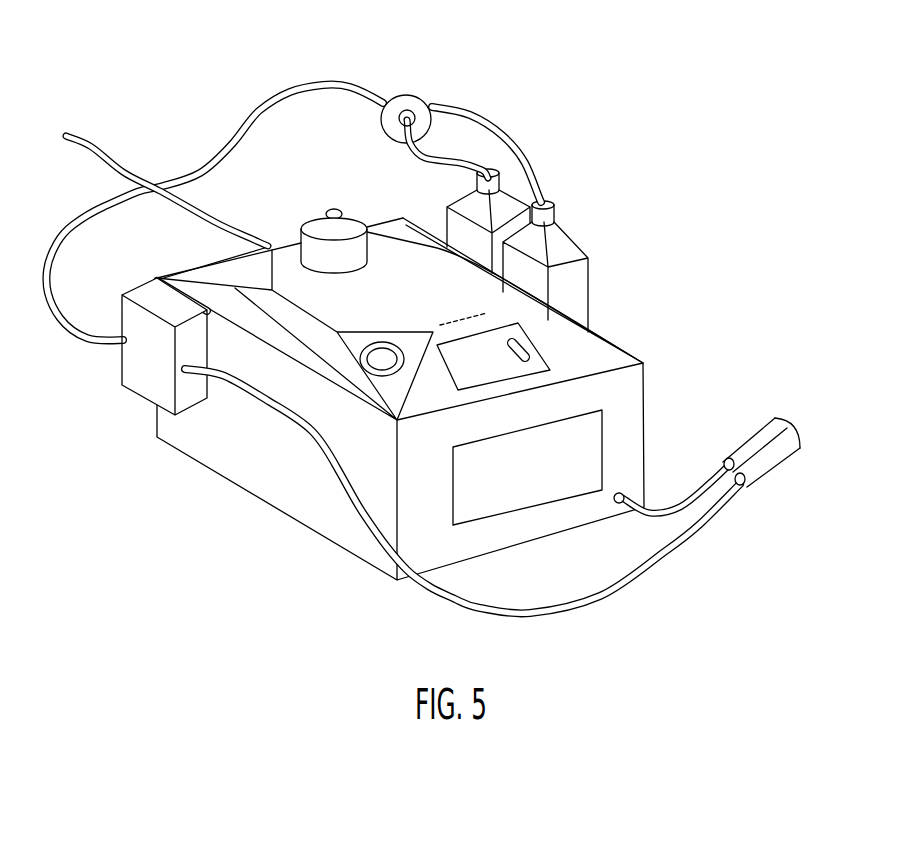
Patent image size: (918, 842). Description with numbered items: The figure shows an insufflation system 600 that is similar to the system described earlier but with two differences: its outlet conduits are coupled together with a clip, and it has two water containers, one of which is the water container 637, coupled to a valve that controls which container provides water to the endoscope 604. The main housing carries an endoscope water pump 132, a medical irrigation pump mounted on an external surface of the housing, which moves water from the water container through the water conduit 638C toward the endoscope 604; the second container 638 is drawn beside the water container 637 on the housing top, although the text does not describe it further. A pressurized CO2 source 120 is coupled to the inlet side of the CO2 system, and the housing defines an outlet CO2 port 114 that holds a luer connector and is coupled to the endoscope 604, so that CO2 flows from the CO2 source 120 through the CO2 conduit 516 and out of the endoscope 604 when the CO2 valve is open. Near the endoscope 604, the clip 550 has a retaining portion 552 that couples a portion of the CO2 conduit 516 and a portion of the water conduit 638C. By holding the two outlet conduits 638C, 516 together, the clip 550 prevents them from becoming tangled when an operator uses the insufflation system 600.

The pressurized CO2 source 120 is at (78, 127).
The insufflation system 600 is at (426, 326).
The water container 637 is at (513, 197).
The second bottle 638 is at (573, 231).
The water conduit 638C is at (597, 606).
The endoscope water pump 132 is at (137, 383).
The outlet CO2 port 114 is at (626, 495).
The CO2 conduit 516 is at (668, 521).
The clip 550 is at (743, 494).
The retaining portion 552 is at (768, 449).
The endoscope 604 is at (779, 416).